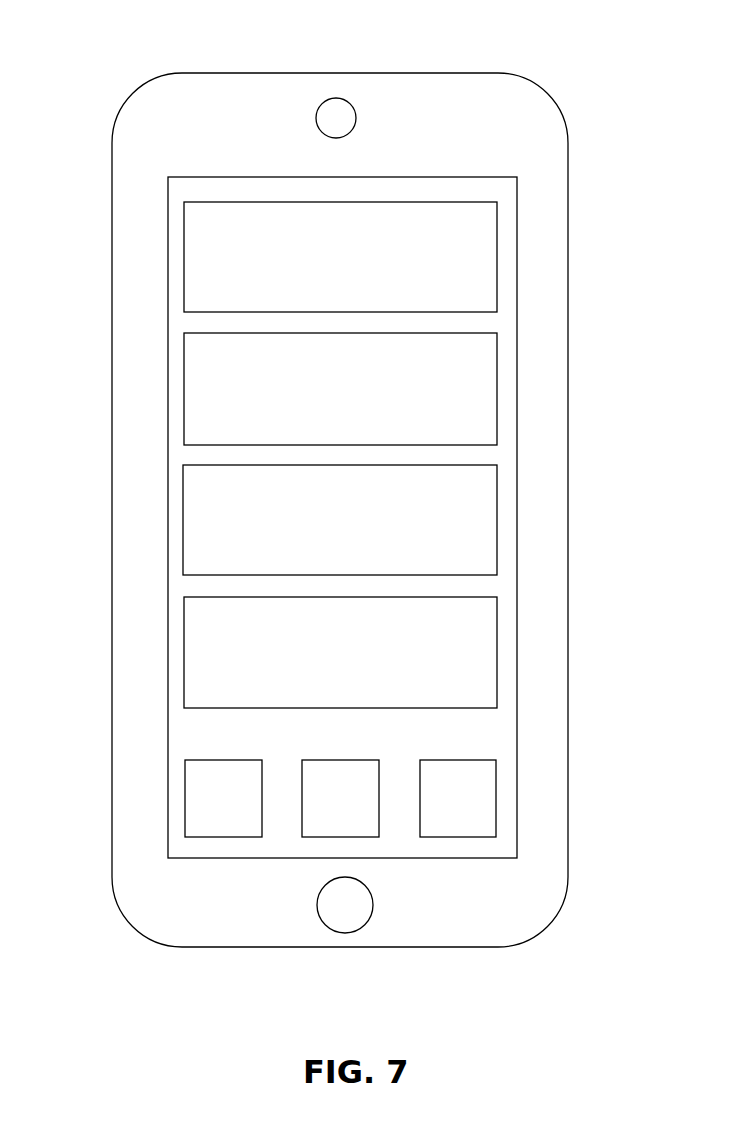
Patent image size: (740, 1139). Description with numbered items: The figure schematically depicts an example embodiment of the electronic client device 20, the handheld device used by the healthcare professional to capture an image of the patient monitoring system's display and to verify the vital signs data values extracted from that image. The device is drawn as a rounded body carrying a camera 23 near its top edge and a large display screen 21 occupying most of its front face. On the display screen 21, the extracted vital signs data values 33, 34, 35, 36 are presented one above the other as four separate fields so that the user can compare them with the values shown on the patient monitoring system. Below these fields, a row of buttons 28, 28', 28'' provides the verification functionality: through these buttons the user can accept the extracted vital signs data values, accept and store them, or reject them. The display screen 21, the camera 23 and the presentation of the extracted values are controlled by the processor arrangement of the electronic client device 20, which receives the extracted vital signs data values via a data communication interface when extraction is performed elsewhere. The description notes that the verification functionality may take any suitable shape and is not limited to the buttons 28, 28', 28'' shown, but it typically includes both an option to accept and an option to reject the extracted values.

The electronic client device 20 is at (362, 981).
The display screen 21 is at (170, 455).
The camera 23 is at (340, 117).
The button 28 is at (223, 838).
The button 28' is at (325, 843).
The button 28'' is at (458, 845).
The extracted vital signs data value 33 is at (497, 253).
The extracted vital signs data value 34 is at (497, 388).
The extracted vital signs data value 35 is at (497, 513).
The extracted vital signs data value 36 is at (497, 650).